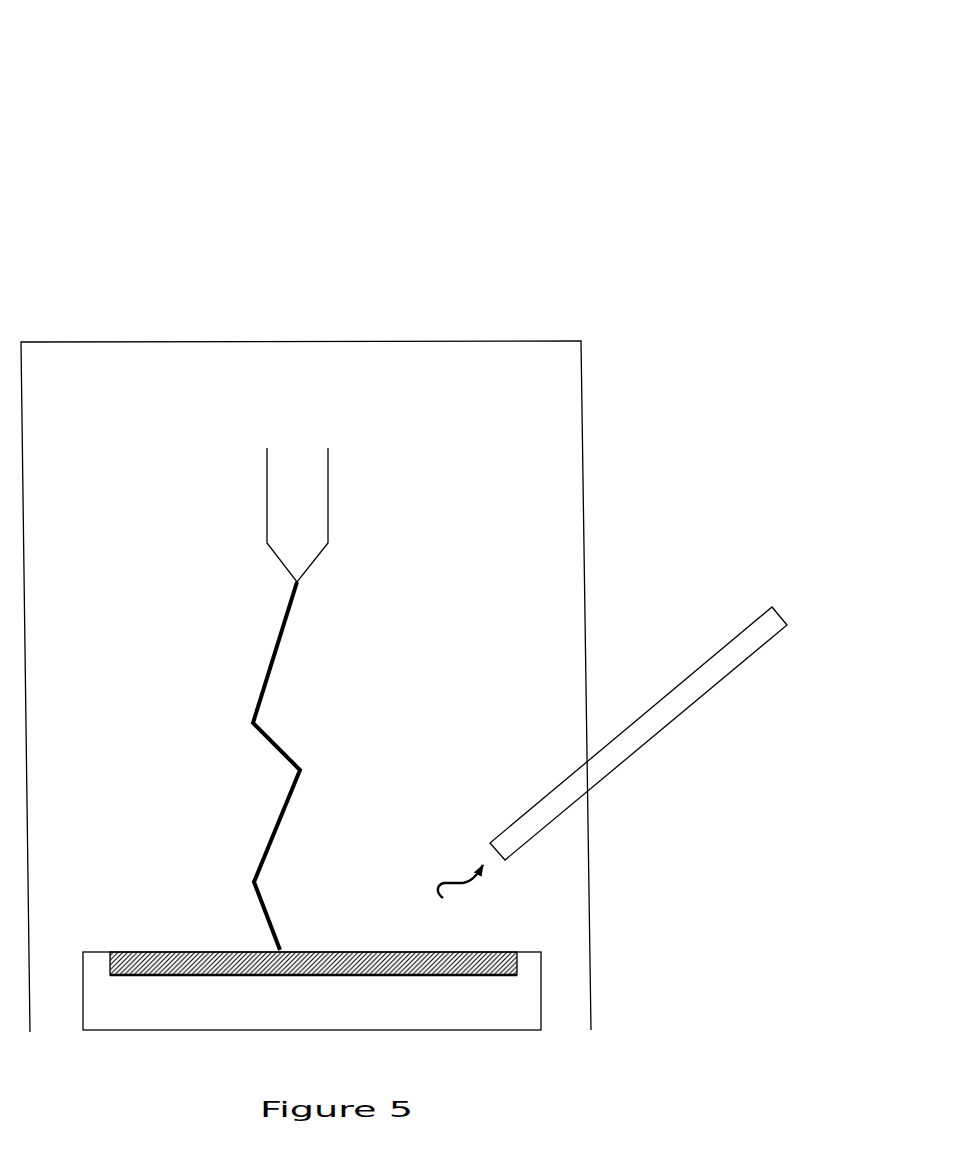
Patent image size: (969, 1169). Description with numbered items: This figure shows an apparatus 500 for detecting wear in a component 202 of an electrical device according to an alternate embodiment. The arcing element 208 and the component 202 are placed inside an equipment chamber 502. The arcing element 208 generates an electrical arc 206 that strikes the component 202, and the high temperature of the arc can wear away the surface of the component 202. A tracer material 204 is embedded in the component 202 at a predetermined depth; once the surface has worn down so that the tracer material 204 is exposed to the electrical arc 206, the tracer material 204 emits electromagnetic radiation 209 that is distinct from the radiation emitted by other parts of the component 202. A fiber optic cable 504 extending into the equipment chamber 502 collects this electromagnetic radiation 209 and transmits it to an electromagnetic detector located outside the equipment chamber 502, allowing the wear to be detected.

The apparatus 500 is at (178, 221).
The equipment chamber 502 is at (372, 341).
The electrical arcing element 208 is at (328, 508).
The electrical arc 206 is at (268, 660).
The electromagnetic radiation 209 is at (446, 882).
The fiber optic cable 504 is at (632, 723).
The component 202 is at (541, 1030).
The tracer material 204 is at (517, 955).